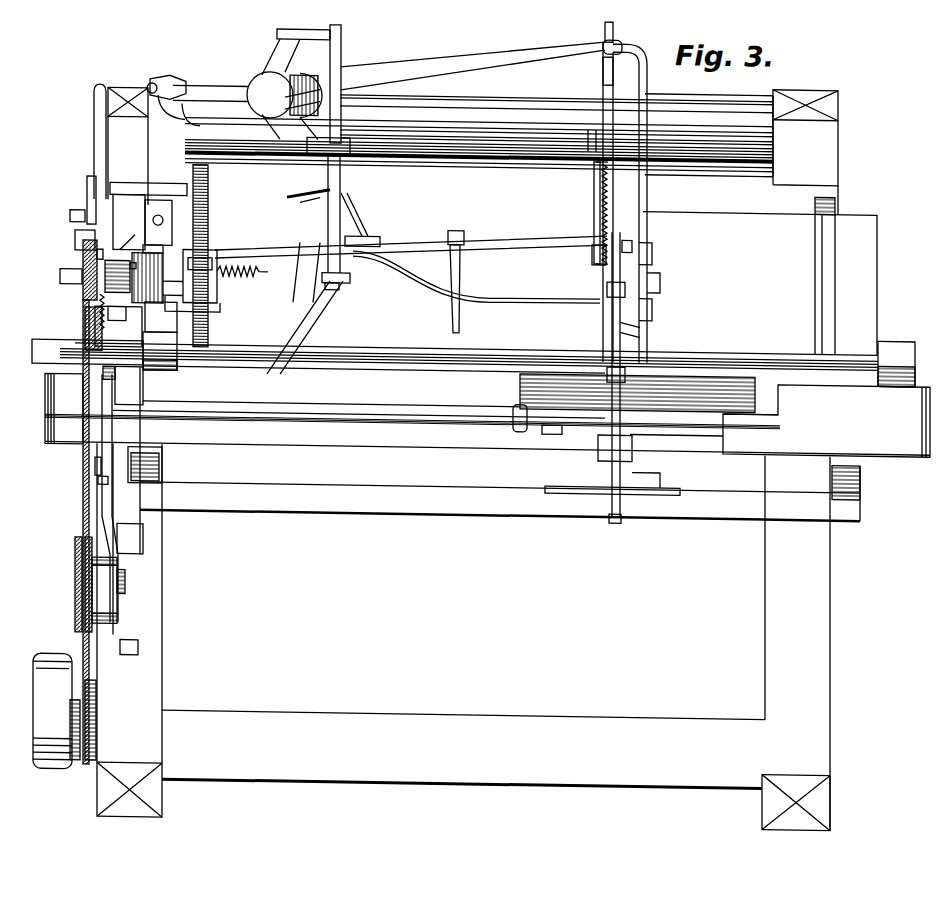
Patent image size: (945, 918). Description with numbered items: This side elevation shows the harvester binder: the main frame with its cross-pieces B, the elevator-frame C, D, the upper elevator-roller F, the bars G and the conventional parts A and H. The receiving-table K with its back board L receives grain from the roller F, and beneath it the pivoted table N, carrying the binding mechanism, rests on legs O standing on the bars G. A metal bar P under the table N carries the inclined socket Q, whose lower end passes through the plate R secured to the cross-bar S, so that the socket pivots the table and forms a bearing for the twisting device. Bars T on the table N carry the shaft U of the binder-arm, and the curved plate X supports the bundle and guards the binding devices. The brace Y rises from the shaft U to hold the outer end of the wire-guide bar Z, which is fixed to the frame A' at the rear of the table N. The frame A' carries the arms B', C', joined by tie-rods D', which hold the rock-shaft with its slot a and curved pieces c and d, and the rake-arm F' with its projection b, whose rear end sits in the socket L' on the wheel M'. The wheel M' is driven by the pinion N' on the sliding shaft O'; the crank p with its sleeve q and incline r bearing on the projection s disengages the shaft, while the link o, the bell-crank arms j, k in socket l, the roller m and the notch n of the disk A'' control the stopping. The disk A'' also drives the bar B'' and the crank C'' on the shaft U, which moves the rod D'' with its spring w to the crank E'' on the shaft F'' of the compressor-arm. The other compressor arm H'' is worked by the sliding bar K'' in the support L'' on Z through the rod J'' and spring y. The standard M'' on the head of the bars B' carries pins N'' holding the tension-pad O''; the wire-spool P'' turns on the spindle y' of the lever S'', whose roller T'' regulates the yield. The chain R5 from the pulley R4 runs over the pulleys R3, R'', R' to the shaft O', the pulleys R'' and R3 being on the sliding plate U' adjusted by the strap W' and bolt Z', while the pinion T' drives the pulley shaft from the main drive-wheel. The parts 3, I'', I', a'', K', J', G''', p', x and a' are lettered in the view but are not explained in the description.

The main frame part A is at (463, 796).
The cross-piece B is at (463, 749).
The elevator-frame C is at (473, 93).
The elevator-frame D is at (467, 470).
The legs or supports O is at (487, 415).
The shaft U is at (469, 346).
The receiving-table K is at (374, 387).
The table N is at (359, 399).
The shaft F'' is at (412, 402).
The machine part H is at (637, 393).
The plate X is at (432, 404).
The cross-bar S is at (500, 488).
The bracket G is at (856, 483).
The pinion T' is at (896, 364).
The back board L is at (760, 284).
The bar B'' is at (436, 270).
The upper elevator-roller F is at (479, 132).
The pin 3 is at (585, 134).
The bar Z is at (593, 59).
The support L'' is at (625, 192).
The sliding bar K'' is at (621, 350).
The bar J'' is at (590, 213).
The spring y is at (588, 213).
The block I'' is at (588, 263).
The arm H'' is at (608, 329).
The slot a is at (627, 248).
The brace rod Y is at (652, 282).
The stop I' is at (658, 282).
The tie-rods D' is at (343, 224).
The projection b is at (360, 220).
The curved piece of metal c is at (308, 198).
The spindles or pins N'' is at (296, 98).
The tension-pad O'' is at (302, 79).
The wire-spool P'' is at (284, 95).
The standard M'' is at (335, 90).
The rod a'' is at (473, 66).
The lever S'' is at (210, 82).
The roller T'' is at (168, 80).
The arm B' is at (183, 119).
The arm of bell-crank lever j is at (92, 166).
The rake-arm F' is at (411, 239).
The hanger K' is at (471, 282).
The rod J' is at (476, 277).
The arm C' is at (302, 327).
The curved piece of metal d is at (301, 272).
The bracket G''' is at (600, 437).
The inclined socket Q is at (612, 463).
The metal bar P is at (595, 474).
The plate or support R is at (646, 479).
The wheel M' is at (211, 256).
The frame A' is at (158, 210).
The socket or support l is at (130, 186).
The arm of bell-crank lever k is at (86, 198).
The anti-friction roller m is at (67, 216).
The notch n is at (75, 240).
The link or rod o is at (128, 222).
The crank p is at (127, 235).
The pulley R' is at (63, 501).
The disk A'' is at (67, 273).
The incline r is at (134, 277).
The pawl p' is at (152, 252).
The pin x is at (127, 290).
The projection s is at (97, 253).
The socket L' is at (204, 261).
The pinion N' is at (206, 296).
The shaft O' is at (243, 279).
The head or sleeve q is at (107, 306).
The coiled spring w is at (117, 311).
The rod D'' is at (118, 326).
The block a' is at (161, 317).
The bars T is at (160, 351).
The crank C'' is at (79, 328).
The crank E'' is at (87, 372).
The set screw or bolt Z' is at (77, 463).
The cord or chain R5 is at (95, 488).
The strap W' is at (101, 498).
The spindle y' is at (130, 558).
The sliding plate U' is at (115, 606).
The pulley R'' is at (71, 584).
The pulley R3 is at (65, 680).
The pulley R4 is at (64, 711).